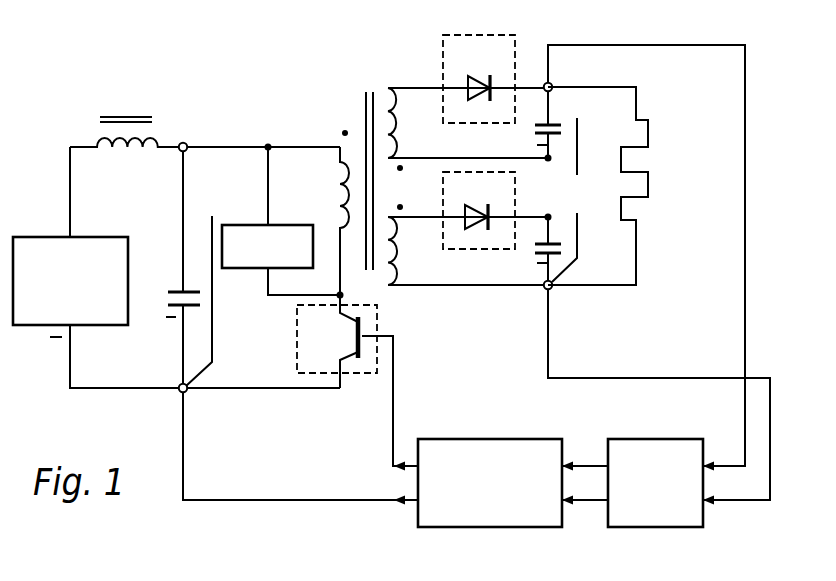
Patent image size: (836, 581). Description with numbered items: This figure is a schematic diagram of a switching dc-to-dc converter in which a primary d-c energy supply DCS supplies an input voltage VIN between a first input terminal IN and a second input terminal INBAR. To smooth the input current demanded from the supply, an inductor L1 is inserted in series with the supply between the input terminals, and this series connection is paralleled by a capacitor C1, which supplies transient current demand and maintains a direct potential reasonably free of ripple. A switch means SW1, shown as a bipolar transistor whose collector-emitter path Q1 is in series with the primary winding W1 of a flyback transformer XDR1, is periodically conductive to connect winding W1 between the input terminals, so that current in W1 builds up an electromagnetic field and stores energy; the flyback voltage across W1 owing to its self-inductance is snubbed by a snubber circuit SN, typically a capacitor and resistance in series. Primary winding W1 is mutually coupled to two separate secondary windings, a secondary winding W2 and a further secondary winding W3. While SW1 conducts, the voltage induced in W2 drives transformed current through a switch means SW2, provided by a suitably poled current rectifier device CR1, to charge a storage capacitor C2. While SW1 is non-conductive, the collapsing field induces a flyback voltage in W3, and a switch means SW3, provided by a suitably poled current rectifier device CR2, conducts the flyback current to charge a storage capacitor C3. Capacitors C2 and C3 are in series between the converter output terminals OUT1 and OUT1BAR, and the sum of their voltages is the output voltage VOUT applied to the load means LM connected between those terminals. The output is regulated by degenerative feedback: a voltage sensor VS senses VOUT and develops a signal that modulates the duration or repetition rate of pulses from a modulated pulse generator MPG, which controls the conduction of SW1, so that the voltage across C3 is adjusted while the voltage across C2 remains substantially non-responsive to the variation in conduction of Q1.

The inductor L1 is at (122, 115).
The primary d-c energy supply DCS is at (93, 326).
The capacitor C1 is at (168, 267).
The first input terminal IN is at (186, 143).
The input voltage VIN is at (192, 154).
The second input terminal INBAR is at (180, 385).
The snubber circuit SN is at (239, 272).
The primary winding W1 is at (338, 194).
The flyback transformer XDR1 is at (378, 73).
The further secondary winding W3 is at (409, 133).
The secondary winding W2 is at (408, 252).
The switch means SW3 is at (500, 34).
The current rectifier device CR2 is at (473, 76).
The switch means SW2 is at (491, 249).
The current rectifier device CR1 is at (478, 205).
The storage capacitor C3 is at (533, 133).
The storage capacitor C2 is at (535, 255).
The converter output terminal OUT1 is at (552, 84).
The converter output terminal OUT1BAR is at (612, 297).
The load means LM is at (650, 168).
The output voltage VOUT is at (557, 92).
The switch means SW1 is at (297, 358).
The transistor Q1 is at (342, 341).
The modulated pulse generator MPG is at (514, 439).
The voltage sensor VS is at (657, 439).